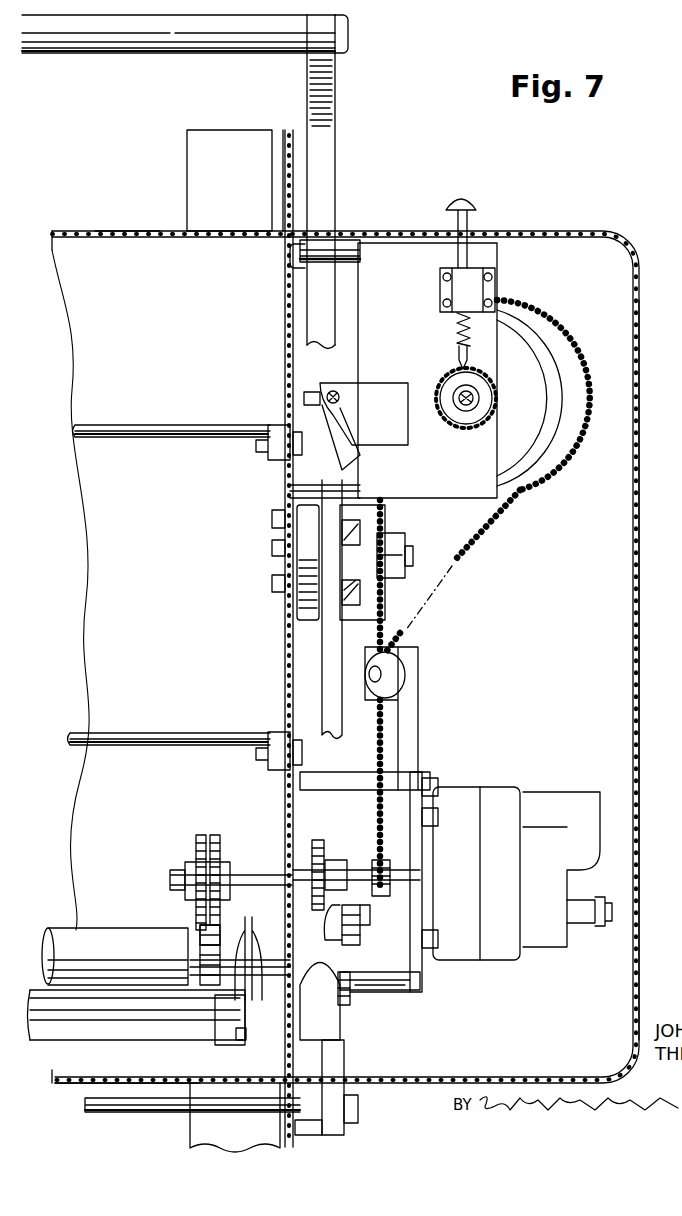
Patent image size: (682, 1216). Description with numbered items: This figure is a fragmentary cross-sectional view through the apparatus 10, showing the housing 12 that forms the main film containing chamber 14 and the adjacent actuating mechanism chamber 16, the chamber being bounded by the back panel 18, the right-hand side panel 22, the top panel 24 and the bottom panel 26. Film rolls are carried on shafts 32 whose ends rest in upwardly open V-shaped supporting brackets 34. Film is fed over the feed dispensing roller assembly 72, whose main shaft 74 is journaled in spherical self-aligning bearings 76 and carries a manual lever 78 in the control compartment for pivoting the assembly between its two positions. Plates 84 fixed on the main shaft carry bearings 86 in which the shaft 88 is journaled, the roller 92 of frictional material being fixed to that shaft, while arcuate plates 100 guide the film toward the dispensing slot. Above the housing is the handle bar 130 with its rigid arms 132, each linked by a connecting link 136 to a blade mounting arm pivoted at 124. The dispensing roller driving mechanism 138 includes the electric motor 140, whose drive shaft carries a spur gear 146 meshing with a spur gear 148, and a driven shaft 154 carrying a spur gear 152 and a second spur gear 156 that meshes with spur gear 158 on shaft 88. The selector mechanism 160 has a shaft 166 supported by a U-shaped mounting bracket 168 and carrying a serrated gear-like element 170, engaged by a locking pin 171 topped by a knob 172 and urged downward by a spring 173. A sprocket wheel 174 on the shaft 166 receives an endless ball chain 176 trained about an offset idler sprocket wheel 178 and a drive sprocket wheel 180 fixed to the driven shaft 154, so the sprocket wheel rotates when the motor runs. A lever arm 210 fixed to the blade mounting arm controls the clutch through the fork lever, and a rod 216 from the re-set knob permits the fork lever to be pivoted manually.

The apparatus 10 is at (78, 215).
The housing 12 is at (164, 232).
The main film containing chamber 14 is at (70, 240).
The actuating mechanism chamber 16 is at (642, 860).
The back panel 18 is at (181, 318).
The right-hand side panel 22 is at (292, 135).
The top panel 24 is at (98, 238).
The bottom panel 26 is at (70, 1085).
The shaft 32 is at (166, 427).
The V-shaped supporting bracket 34 is at (278, 428).
The feed dispensing roller assembly 72 is at (148, 872).
The main shaft 74 is at (340, 1003).
The spherical self-aligning bearing 76 is at (325, 1005).
The manual lever 78 is at (355, 1000).
The plate 84 is at (246, 1028).
The bearing 86 is at (255, 928).
The shaft 88 is at (196, 997).
The roller 92 is at (70, 930).
The elongated arcuate plate 100 is at (60, 1040).
The pivot 124 is at (410, 562).
The handle bar 130 is at (115, 33).
The rigid arm 132 is at (330, 196).
The connecting link 136 is at (360, 940).
The dispensing roller driving mechanism 138 is at (504, 796).
The electric motor 140 is at (548, 800).
The spur gear 146 is at (204, 835).
The spur gear 148 is at (202, 935).
The spur gear 152 is at (318, 840).
The driven shaft 154 is at (340, 864).
The spur gear 156 is at (222, 845).
The spur gear 158 is at (212, 925).
The mechanism 160 is at (551, 332).
The shaft 166 is at (468, 412).
The U-shaped mounting bracket 168 is at (377, 303).
The gear-like element 170 is at (480, 410).
The locking pin 171 is at (458, 353).
The knob 172 is at (470, 202).
The spring 173 is at (455, 330).
The sprocket wheel 174 is at (552, 406).
The endless ball chain 176 is at (515, 490).
The offset idler sprocket wheel 178 is at (376, 692).
The drive sprocket wheel 180 is at (384, 890).
The lever arm 210 is at (348, 453).
The rod 216 is at (340, 395).